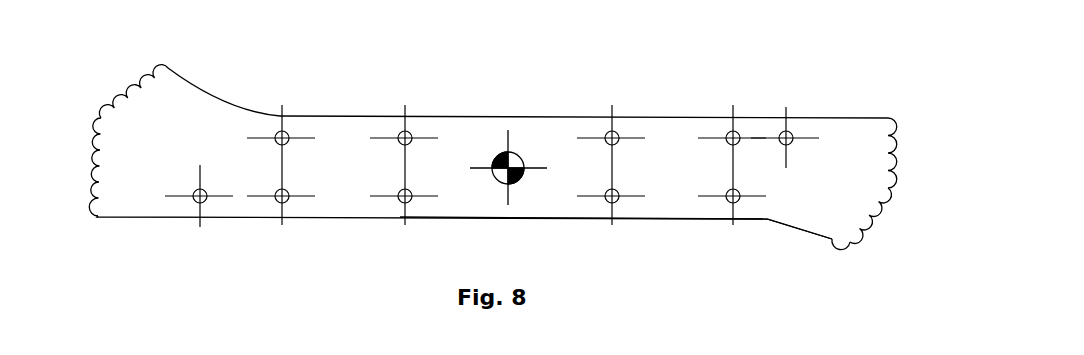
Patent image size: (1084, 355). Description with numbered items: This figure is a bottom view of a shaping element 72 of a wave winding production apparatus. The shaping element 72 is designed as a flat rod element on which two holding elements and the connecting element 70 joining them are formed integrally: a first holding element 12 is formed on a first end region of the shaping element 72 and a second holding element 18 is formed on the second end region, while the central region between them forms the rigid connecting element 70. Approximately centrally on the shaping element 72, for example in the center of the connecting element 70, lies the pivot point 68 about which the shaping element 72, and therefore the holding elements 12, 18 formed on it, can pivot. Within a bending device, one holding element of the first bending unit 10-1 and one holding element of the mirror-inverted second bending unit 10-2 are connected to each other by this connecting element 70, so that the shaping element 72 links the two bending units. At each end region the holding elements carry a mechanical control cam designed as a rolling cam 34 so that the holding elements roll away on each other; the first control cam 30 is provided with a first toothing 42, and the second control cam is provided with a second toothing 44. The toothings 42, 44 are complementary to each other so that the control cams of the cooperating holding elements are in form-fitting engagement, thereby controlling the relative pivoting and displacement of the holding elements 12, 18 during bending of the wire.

The first bending unit 10-1 is at (117, 155).
The second bending unit 10-2 is at (856, 200).
The first holding element 12 is at (206, 76).
The second holding element 18 is at (795, 256).
The first control cam 30 is at (117, 111).
The rolling cam 34 is at (900, 150).
The first toothing 42 is at (171, 60).
The second toothing 44 is at (893, 168).
The pivot point 68 is at (522, 152).
The connecting element 70 is at (453, 135).
The shaping element 72 is at (672, 273).